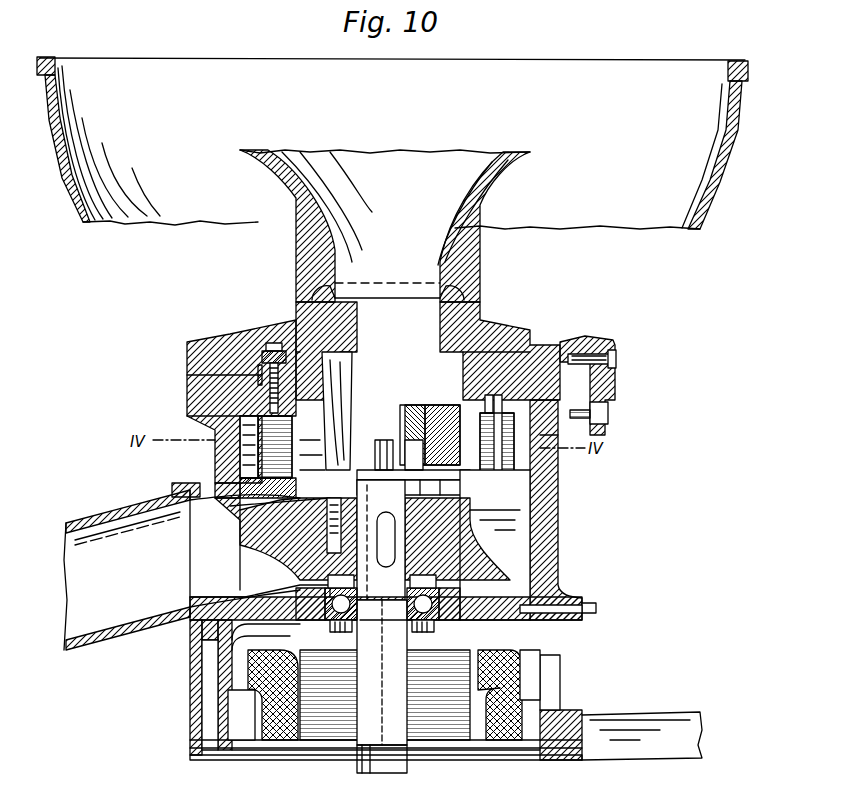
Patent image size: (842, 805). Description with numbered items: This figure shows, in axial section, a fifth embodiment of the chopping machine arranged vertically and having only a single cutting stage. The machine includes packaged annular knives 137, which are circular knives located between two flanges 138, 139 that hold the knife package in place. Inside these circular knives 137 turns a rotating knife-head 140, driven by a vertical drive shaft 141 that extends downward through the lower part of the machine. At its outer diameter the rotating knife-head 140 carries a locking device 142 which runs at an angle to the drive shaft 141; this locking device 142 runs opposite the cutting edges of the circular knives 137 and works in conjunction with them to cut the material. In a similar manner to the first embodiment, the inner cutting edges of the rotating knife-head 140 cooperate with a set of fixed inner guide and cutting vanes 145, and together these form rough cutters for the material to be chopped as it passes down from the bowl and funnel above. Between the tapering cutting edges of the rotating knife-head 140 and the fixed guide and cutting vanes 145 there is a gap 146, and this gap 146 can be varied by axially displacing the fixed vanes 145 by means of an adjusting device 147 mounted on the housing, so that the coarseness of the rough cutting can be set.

The annular knives 137 is at (250, 443).
The flange 138 is at (322, 420).
The flange 139 is at (295, 488).
The rotating knife-head 140 is at (300, 430).
The drive shaft 141 is at (405, 765).
The locking device 142 is at (480, 462).
The fixed inner guide and cutting vanes 145 is at (284, 342).
The gap 146 is at (230, 341).
The adjusting device 147 is at (612, 372).